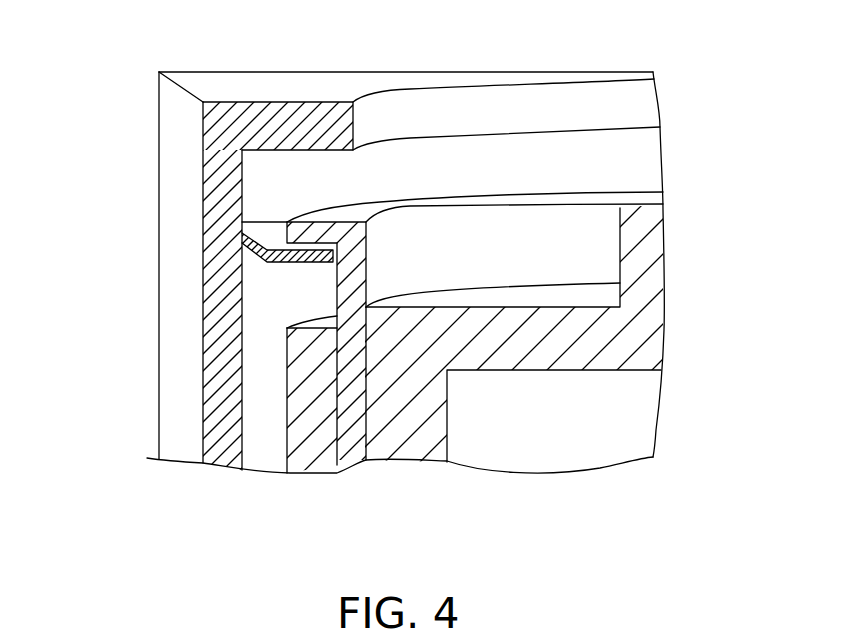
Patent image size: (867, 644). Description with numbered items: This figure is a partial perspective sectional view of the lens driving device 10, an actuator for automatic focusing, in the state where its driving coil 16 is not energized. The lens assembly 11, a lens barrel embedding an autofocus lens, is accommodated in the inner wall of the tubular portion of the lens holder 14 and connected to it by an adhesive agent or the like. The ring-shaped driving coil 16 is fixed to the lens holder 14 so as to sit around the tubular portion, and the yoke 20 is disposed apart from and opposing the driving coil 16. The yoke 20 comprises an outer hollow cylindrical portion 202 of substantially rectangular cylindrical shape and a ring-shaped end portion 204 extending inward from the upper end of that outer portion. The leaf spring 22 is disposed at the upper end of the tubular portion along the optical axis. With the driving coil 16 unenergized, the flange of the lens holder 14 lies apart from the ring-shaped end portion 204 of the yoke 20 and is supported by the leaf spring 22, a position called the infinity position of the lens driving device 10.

The lens driving device 10 is at (704, 114).
The lens assembly 11 is at (655, 250).
The lens holder 14 is at (353, 458).
The driving coil 16 is at (297, 377).
The yoke 20 is at (183, 213).
The leaf spring 22 is at (243, 248).
The outer hollow cylindrical portion 202 is at (213, 430).
The ring-shaped end portion 204 is at (268, 88).